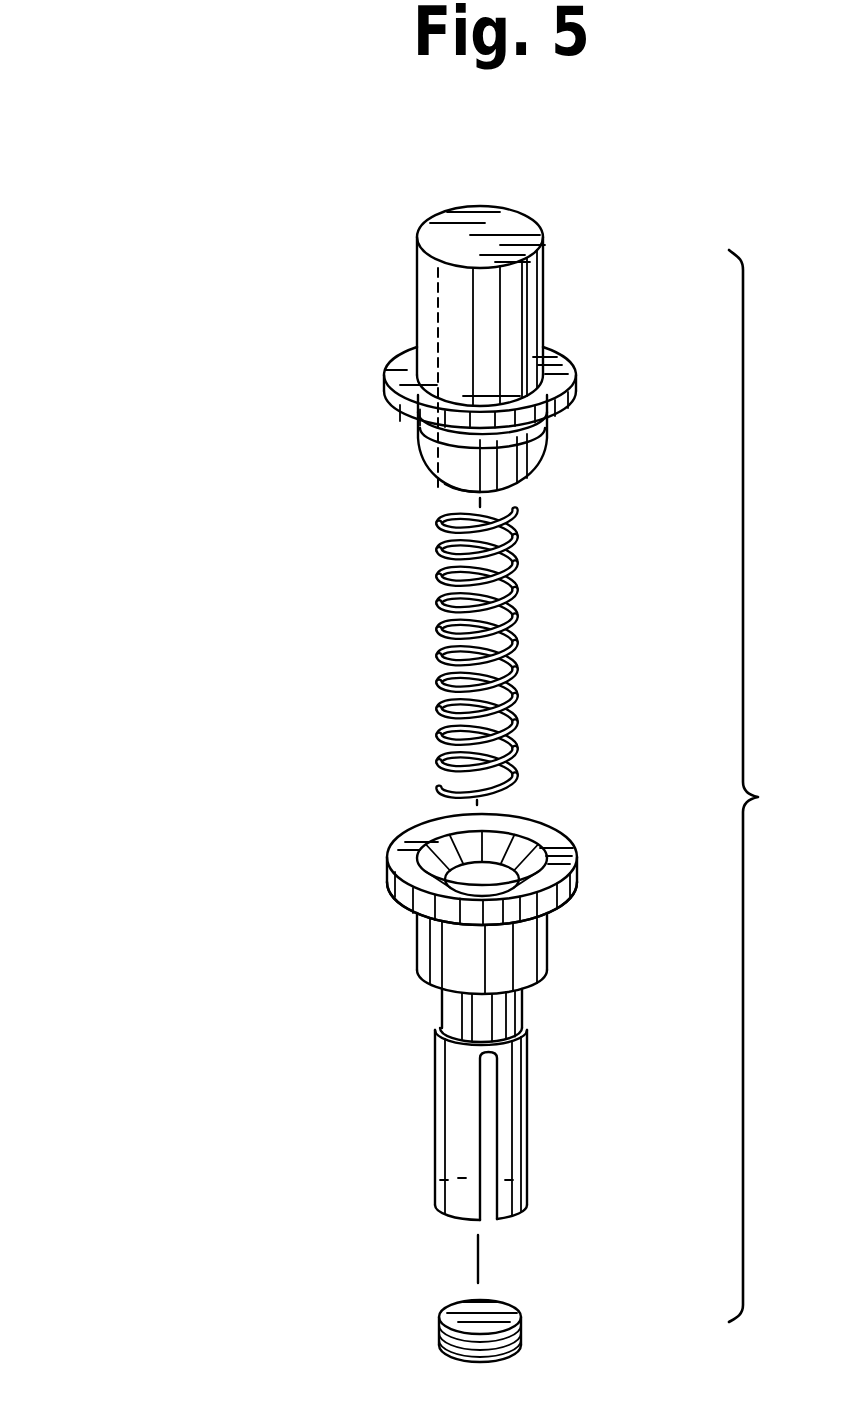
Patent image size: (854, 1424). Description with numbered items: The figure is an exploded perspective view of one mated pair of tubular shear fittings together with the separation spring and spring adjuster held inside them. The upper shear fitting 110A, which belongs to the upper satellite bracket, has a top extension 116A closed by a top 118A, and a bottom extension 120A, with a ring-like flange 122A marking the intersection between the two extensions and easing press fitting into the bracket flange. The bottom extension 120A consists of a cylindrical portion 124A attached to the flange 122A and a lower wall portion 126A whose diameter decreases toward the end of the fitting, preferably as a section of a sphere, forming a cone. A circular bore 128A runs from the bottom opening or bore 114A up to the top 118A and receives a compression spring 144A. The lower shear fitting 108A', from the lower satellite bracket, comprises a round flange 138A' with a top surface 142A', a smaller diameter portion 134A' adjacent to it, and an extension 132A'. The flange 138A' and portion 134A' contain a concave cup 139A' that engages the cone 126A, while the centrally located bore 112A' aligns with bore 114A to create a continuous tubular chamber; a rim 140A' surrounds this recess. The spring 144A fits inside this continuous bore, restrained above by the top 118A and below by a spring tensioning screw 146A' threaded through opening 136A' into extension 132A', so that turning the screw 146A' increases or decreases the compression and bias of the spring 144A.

The shear fitting 110A is at (452, 338).
The top extension 116A is at (458, 317).
The top 118A is at (505, 212).
The circular bore 128A is at (522, 304).
The ring-like flange 122A is at (556, 372).
The bottom extension 120A is at (397, 457).
The cylindrical portion 124A is at (540, 450).
The lower wall portion 126A is at (537, 466).
The bore 114A is at (442, 500).
The compression spring 144A is at (518, 657).
The shear fitting 108A' is at (466, 999).
The top surface 142A' is at (536, 866).
The concave opening 139A' is at (546, 815).
The rim of conical recess 140A' is at (429, 826).
The bore 112A' is at (398, 850).
The round flange portion 138A' is at (420, 909).
The smaller diameter portion 134A' is at (541, 977).
The extension 132A' is at (542, 1125).
The opening 136A' is at (560, 1154).
The spring tensioning screw 146A' is at (544, 1320).